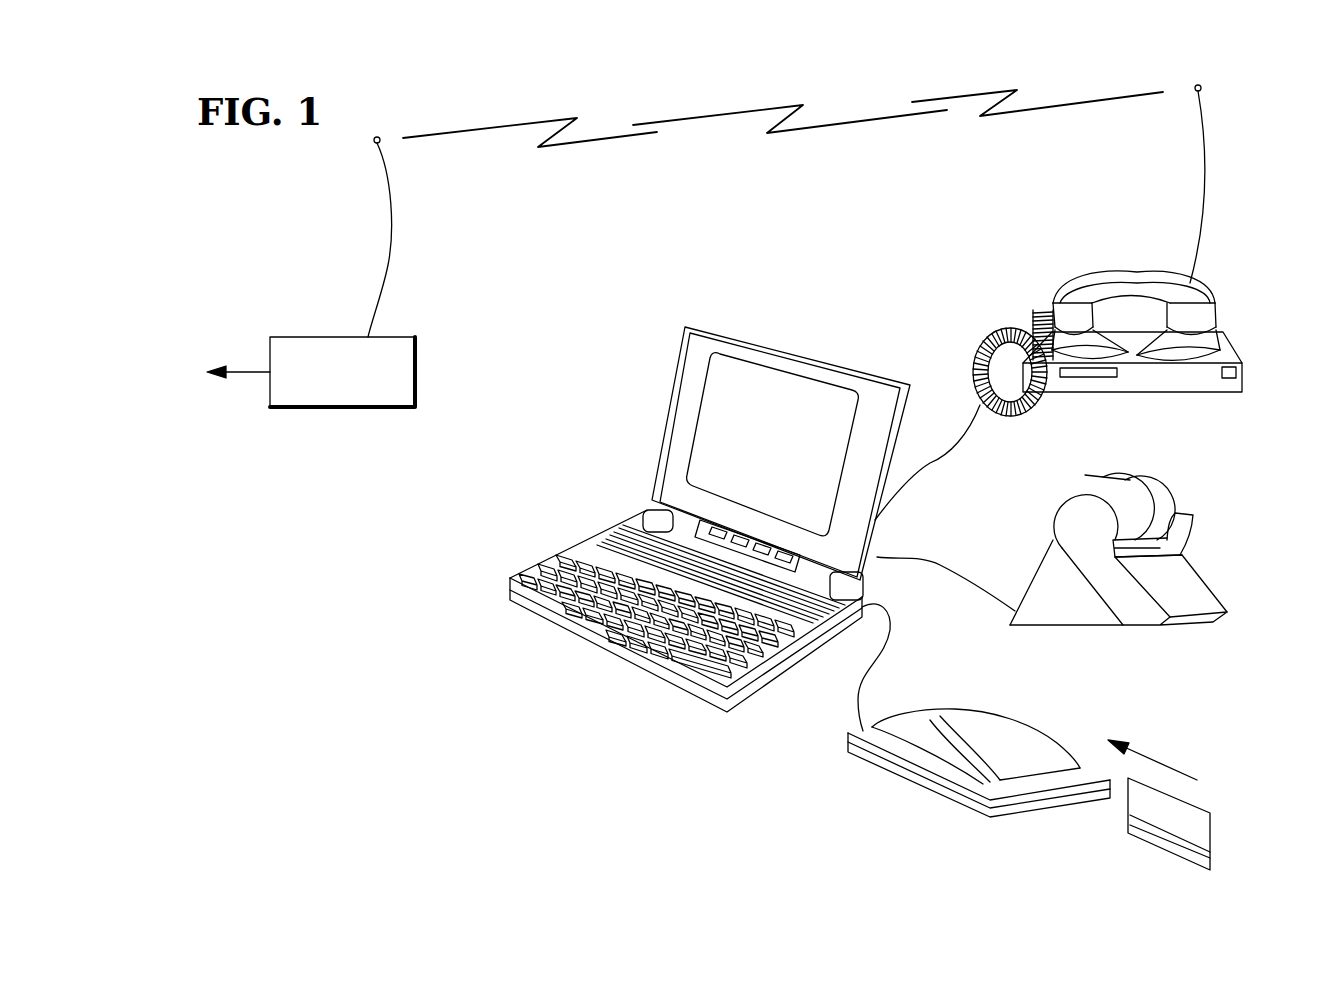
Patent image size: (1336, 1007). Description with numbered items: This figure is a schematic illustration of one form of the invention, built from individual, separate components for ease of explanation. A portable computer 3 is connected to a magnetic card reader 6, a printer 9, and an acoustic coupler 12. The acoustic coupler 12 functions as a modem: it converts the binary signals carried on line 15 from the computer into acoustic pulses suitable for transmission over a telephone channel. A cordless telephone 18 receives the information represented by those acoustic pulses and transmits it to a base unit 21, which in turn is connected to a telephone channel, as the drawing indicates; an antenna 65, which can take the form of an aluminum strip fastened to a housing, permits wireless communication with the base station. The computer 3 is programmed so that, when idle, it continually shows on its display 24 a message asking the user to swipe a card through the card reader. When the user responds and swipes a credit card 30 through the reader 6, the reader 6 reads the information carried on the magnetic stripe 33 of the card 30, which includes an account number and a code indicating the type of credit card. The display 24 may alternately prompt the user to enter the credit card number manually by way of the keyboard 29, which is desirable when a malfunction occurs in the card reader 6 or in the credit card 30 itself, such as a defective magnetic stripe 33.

The keyboard 29 is at (565, 509).
The portable computer 3 is at (710, 523).
The display 24 is at (783, 447).
The base unit 21 is at (407, 337).
The antenna 65 is at (1212, 137).
The cordless telephone 18 is at (1093, 280).
The acoustic coupler 12 is at (1190, 396).
The line 15 is at (950, 458).
The printer 9 is at (1200, 578).
The magnetic card reader 6 is at (1020, 722).
The credit card 30 is at (1184, 811).
The magnetic stripe 33 is at (1173, 838).